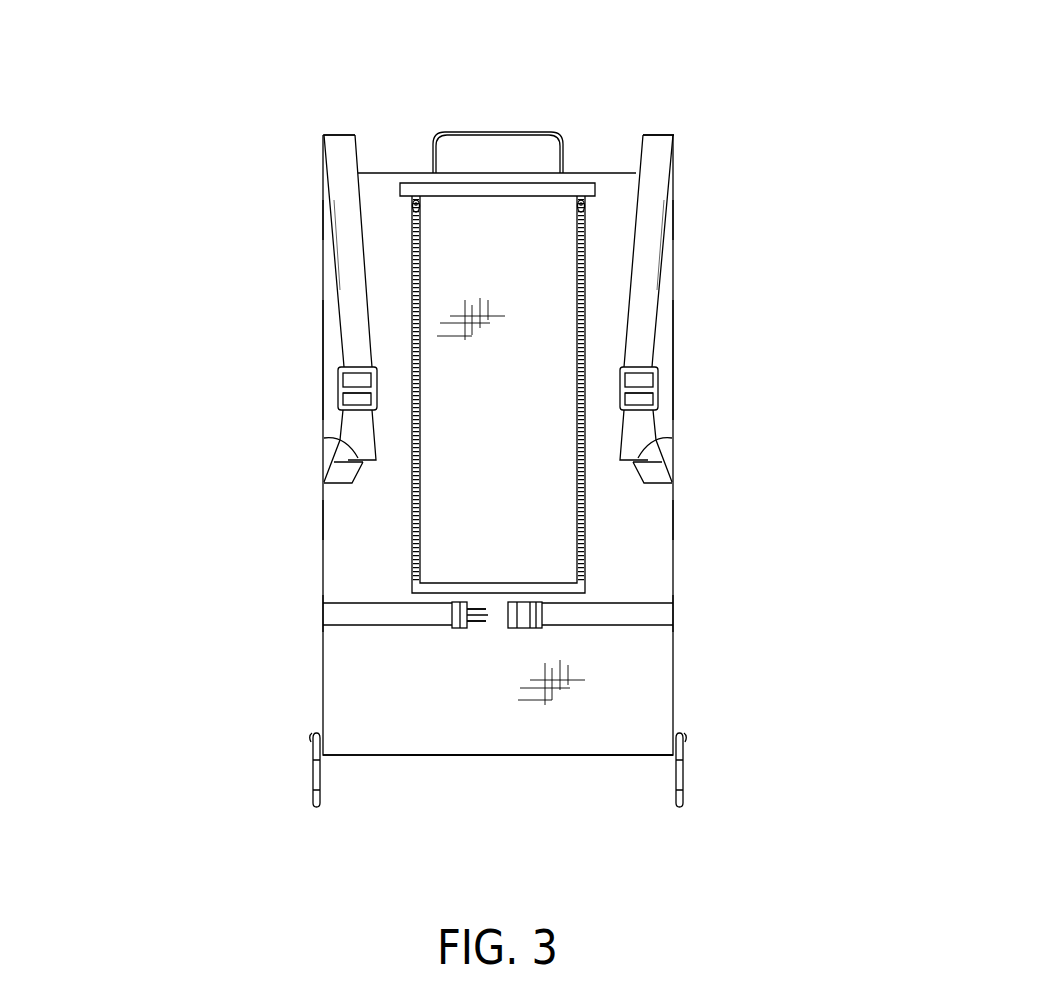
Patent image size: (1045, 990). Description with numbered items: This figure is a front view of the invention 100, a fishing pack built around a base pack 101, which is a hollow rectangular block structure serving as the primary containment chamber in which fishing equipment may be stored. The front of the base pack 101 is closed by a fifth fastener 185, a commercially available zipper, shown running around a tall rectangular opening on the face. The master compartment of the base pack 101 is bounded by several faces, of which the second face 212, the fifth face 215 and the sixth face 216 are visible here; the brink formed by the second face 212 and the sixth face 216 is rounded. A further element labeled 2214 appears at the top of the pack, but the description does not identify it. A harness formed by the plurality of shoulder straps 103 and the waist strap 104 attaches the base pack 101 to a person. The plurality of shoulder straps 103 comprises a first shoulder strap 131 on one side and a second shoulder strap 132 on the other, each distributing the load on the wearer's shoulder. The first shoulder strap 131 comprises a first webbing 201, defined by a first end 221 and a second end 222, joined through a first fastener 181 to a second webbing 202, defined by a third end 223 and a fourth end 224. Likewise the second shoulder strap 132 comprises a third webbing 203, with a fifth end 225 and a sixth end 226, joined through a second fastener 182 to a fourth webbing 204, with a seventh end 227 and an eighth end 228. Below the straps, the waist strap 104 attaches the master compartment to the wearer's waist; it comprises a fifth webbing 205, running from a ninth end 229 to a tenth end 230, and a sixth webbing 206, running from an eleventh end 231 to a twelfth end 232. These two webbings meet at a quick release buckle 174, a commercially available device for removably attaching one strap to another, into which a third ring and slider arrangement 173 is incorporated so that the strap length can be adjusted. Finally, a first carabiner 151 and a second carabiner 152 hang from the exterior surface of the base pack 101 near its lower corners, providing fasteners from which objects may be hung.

The invention 100 is at (165, 157).
The base pack 101 is at (323, 358).
The plurality of shoulder straps 103 is at (347, 253).
The waist strap 104 is at (528, 695).
The first shoulder strap 131 is at (338, 135).
The second shoulder strap 132 is at (659, 135).
The first carabiner 151 is at (318, 807).
The second carabiner 152 is at (680, 790).
The third ring and slider arrangement 173 is at (550, 625).
The quick release buckle 174 is at (508, 628).
The first fastener 181 is at (357, 381).
The second fastener 182 is at (640, 400).
The fifth fastener 185 is at (578, 207).
The first webbing 201 is at (340, 163).
The second webbing 202 is at (342, 466).
The third webbing 203 is at (607, 230).
The fourth webbing 204 is at (655, 470).
The fifth webbing 205 is at (383, 613).
The sixth webbing 206 is at (615, 615).
The second face 212 is at (423, 722).
The fifth face 215 is at (675, 358).
The sixth face 216 is at (610, 754).
The first end 221 is at (327, 222).
The second end 222 is at (345, 455).
The third end 223 is at (327, 516).
The fourth end 224 is at (357, 392).
The fifth end 225 is at (669, 222).
The sixth end 226 is at (650, 455).
The seventh end 227 is at (669, 516).
The eighth end 228 is at (645, 400).
The ninth end 229 is at (327, 612).
The tenth end 230 is at (452, 628).
The eleventh end 231 is at (668, 612).
The twelfth end 232 is at (548, 617).
The top panel 2214 is at (592, 173).